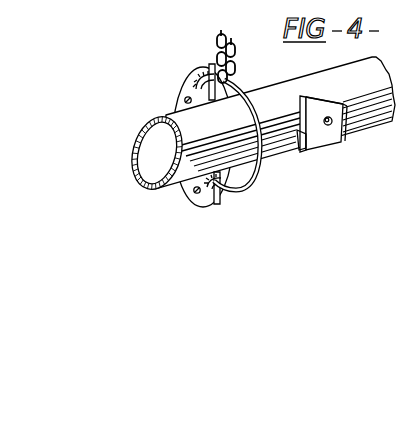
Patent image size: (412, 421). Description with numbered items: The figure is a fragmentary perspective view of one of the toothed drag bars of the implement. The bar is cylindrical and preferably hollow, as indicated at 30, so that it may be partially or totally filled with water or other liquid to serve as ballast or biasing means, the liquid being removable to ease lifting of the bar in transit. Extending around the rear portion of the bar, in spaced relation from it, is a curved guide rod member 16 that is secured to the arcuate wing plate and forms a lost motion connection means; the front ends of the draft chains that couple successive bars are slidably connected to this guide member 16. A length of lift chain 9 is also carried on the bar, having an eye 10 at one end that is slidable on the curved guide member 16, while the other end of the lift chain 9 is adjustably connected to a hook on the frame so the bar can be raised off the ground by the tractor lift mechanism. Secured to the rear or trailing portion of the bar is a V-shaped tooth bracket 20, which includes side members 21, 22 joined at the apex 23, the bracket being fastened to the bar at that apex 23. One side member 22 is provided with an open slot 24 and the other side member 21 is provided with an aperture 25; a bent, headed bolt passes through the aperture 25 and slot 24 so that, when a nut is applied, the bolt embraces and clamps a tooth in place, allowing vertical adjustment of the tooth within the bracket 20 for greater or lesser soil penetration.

The lift chain 9 is at (216, 47).
The eye 10 is at (234, 87).
The curved guide rod member 16 is at (251, 118).
The V-shaped tooth bracket 20 is at (310, 122).
The side member 21 is at (280, 122).
The side member 22 is at (302, 117).
The apex 23 is at (318, 83).
The open slot 24 is at (298, 139).
The aperture 25 is at (362, 124).
The hollow interior 30 is at (153, 140).